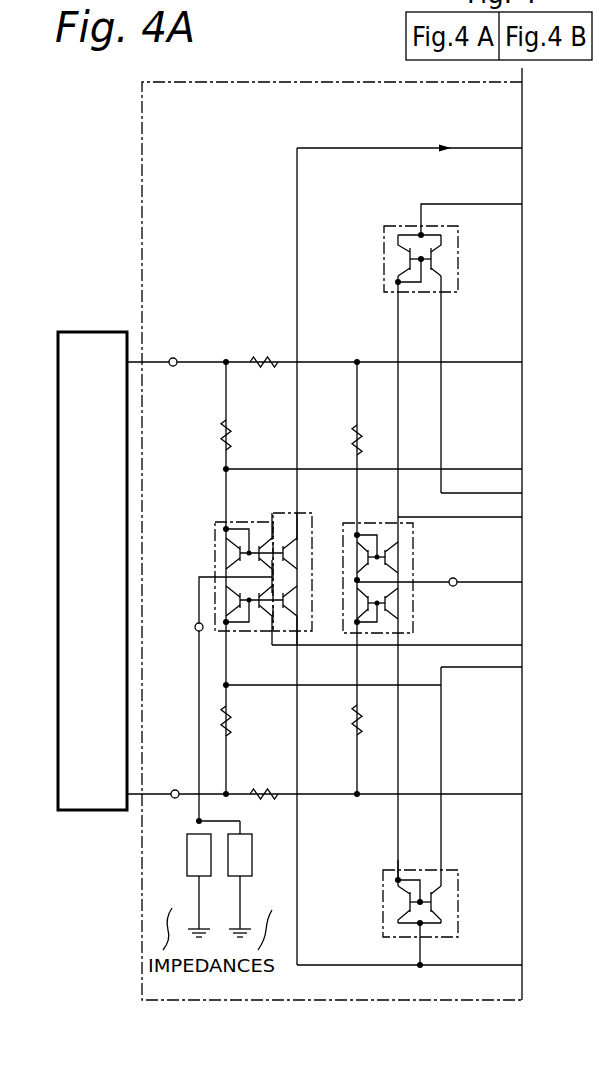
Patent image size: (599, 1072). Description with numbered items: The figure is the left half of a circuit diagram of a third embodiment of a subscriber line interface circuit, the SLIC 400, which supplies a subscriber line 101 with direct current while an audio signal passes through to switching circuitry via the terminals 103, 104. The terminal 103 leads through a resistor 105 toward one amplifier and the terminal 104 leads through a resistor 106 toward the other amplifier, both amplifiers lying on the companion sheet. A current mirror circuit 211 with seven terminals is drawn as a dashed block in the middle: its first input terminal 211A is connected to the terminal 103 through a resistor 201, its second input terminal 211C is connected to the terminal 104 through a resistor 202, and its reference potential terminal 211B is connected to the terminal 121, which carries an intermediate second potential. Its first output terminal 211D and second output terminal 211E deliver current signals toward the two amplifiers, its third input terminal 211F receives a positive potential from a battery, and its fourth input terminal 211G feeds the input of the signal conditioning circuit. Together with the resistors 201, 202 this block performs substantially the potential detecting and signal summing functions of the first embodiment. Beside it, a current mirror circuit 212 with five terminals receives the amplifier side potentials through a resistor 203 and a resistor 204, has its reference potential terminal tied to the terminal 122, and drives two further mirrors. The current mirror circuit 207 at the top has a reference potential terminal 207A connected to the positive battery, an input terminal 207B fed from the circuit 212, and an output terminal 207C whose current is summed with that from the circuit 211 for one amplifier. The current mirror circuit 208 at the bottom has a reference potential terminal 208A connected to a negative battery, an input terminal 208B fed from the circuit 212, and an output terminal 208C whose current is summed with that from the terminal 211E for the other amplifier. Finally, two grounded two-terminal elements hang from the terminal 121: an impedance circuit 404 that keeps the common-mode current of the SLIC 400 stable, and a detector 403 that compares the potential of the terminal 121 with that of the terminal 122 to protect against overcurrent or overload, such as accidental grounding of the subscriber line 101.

The SLIC 400 is at (299, 84).
The subscriber line 101 is at (88, 332).
The terminal 103 is at (175, 358).
The terminal 104 is at (175, 790).
The resistor 105 is at (262, 357).
The resistor 106 is at (263, 798).
The terminal 121 is at (196, 630).
The terminal 122 is at (456, 586).
The resistor 201 is at (222, 440).
The resistor 202 is at (229, 722).
The resistor 203 is at (352, 442).
The resistor 204 is at (353, 720).
The current mirror circuit 207 is at (383, 237).
The reference potential terminal 207A is at (418, 214).
The input terminal 207B is at (396, 296).
The output terminal 207C is at (444, 297).
The current mirror circuit 208 is at (383, 905).
The reference potential terminal 208A is at (426, 942).
The input terminal 208B is at (396, 868).
The output terminal 208C is at (448, 866).
The current mirror circuit 211 is at (214, 543).
The first input terminal 211A is at (222, 522).
The reference potential terminal 211B is at (212, 577).
The second input terminal 211C is at (230, 632).
The first output terminal 211D is at (270, 514).
The second output terminal 211E is at (275, 634).
The third input terminal 211F is at (302, 515).
The fourth input terminal 211G is at (303, 633).
The current mirror circuit 212 is at (415, 569).
The detector 403 is at (187, 858).
The impedance circuit 404 is at (252, 862).